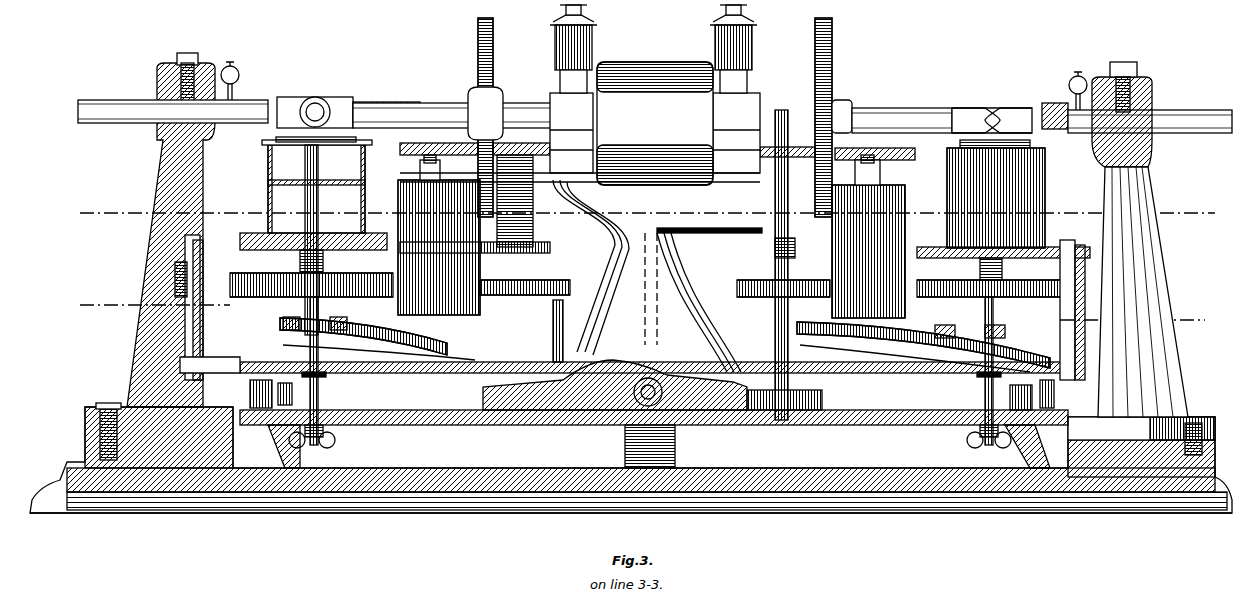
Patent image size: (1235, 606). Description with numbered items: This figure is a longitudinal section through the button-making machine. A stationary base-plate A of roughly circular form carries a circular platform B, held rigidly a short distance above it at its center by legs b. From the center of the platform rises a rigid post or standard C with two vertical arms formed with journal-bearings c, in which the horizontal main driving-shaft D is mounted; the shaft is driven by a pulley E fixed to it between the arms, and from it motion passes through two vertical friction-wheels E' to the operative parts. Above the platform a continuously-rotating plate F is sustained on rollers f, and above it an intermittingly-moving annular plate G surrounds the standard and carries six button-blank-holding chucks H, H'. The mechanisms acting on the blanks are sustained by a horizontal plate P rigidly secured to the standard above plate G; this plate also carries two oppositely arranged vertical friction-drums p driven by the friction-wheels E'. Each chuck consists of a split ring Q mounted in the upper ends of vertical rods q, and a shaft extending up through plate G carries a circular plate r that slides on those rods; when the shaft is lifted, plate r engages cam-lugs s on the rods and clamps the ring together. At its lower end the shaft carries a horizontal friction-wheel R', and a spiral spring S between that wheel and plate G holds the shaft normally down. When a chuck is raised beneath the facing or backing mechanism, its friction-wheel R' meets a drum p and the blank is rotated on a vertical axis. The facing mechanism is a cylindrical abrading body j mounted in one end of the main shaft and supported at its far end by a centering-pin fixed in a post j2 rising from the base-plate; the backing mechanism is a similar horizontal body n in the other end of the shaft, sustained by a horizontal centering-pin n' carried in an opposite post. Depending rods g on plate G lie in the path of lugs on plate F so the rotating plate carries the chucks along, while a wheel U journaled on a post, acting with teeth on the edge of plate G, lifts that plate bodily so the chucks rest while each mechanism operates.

The base-plate A is at (631, 458).
The circular platform B is at (654, 425).
The legs b is at (652, 446).
The post or standard C is at (652, 295).
The main driving-shaft D is at (528, 110).
The pulley E is at (580, 123).
The vertical friction-wheels E' is at (653, 117).
The journal-bearings c is at (655, 133).
The continuously-rotating plate F is at (652, 354).
The annular plate G is at (665, 233).
The button-blank-holding chuck H is at (727, 194).
The button-blank-holding chuck H' is at (647, 216).
The horizontal plate P is at (713, 220).
The vertical friction-drums p is at (868, 236).
The split ring Q is at (317, 186).
The vertical rod q is at (362, 235).
The circular plate r is at (262, 150).
The cam-lugs s is at (313, 134).
The spiral spring S is at (325, 262).
The friction-wheel R' is at (549, 287).
The depending rods g is at (420, 327).
The rollers f is at (646, 258).
The wheel U is at (646, 293).
The cylindrical abrading body j is at (312, 95).
The post j2 is at (171, 230).
The horizontal body n is at (1042, 112).
The centering-pin n' is at (1140, 239).